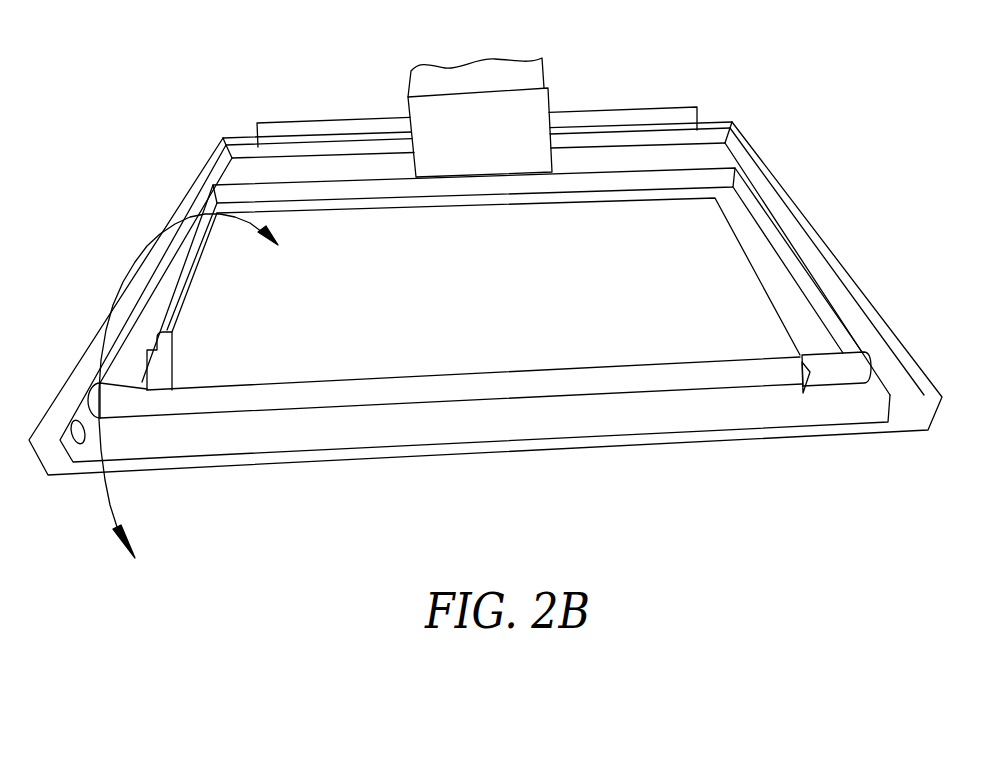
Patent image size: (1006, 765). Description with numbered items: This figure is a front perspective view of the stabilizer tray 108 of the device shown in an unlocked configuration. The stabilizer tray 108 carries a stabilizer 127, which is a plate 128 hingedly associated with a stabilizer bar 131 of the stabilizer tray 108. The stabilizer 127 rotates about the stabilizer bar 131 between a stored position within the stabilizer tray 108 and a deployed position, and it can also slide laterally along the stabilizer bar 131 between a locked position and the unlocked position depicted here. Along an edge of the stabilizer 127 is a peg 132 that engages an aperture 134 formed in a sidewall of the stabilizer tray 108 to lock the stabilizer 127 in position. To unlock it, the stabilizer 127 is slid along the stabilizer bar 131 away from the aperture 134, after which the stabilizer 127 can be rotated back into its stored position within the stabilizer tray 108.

The stabilizer tray 108 is at (738, 91).
The stabilizer 127 is at (806, 277).
The plate 128 is at (652, 279).
The stabilizer bar 131 is at (863, 357).
The peg 132 is at (172, 335).
The aperture 134 is at (88, 452).